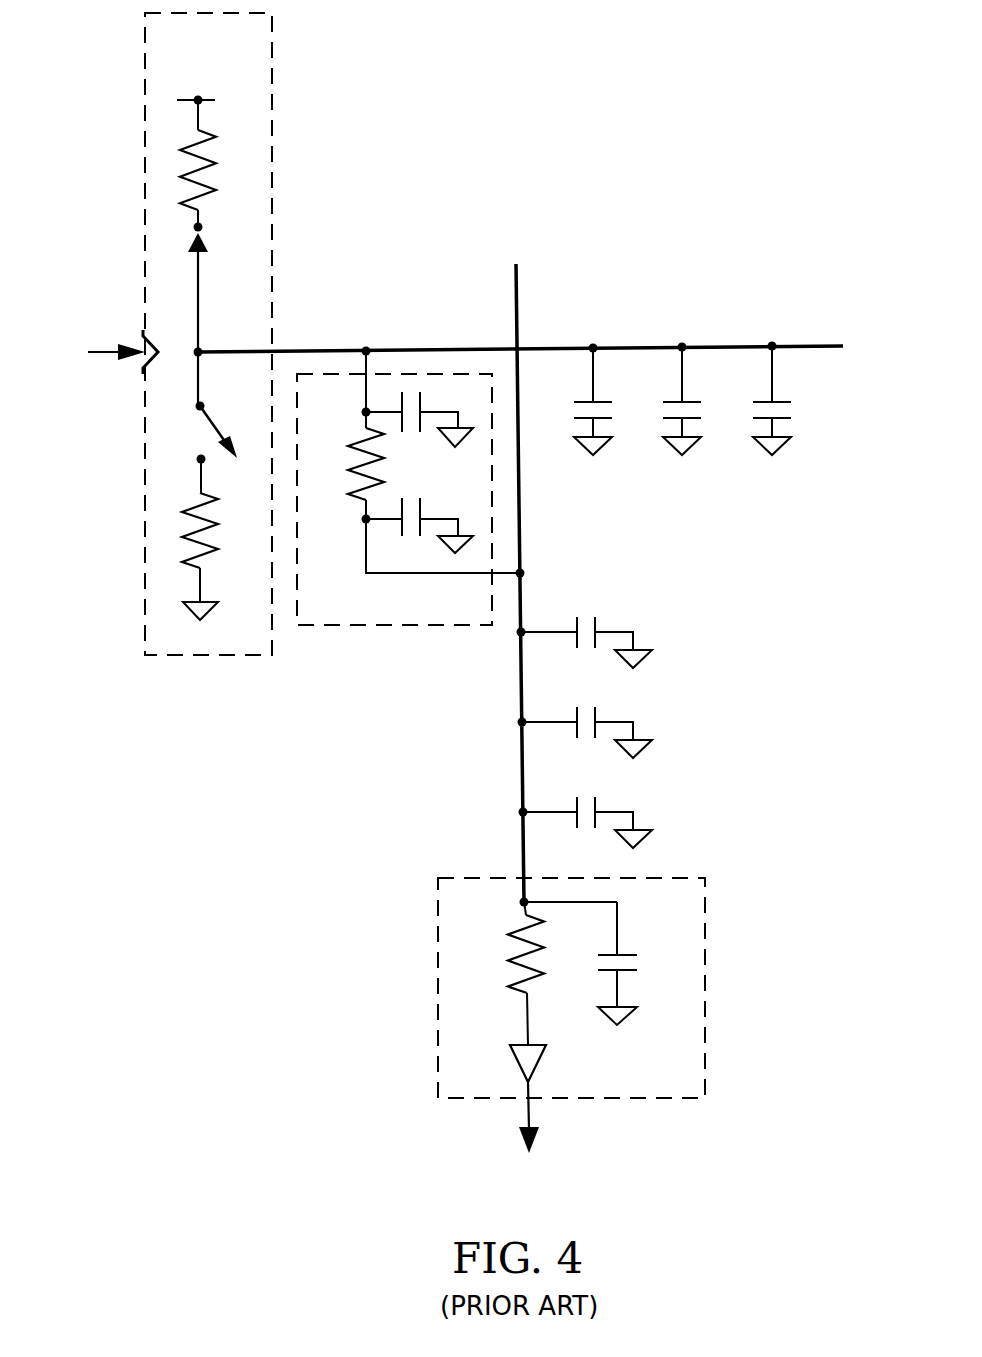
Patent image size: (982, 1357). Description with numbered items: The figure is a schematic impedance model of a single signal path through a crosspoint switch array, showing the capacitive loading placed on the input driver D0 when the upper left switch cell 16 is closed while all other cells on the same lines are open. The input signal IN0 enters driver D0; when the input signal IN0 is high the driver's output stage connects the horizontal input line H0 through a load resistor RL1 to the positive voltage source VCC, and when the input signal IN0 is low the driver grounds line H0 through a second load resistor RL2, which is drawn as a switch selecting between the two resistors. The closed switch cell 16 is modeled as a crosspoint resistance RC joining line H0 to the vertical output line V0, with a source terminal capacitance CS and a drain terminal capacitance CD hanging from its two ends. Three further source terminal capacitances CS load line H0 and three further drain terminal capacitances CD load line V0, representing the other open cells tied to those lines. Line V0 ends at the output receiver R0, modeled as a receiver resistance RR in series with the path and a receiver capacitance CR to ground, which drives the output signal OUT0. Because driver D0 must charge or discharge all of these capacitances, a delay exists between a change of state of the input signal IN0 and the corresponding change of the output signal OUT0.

The IN(0) signal IN0 is at (93, 352).
The driver D0 is at (208, 334).
The positive voltage source VCC is at (198, 100).
The load resistor RL1 is at (223, 163).
The load resistor RL2 is at (226, 539).
The input line H0 is at (463, 347).
The output line V0 is at (519, 758).
The switch cell 16 is at (411, 486).
The crosspoint resistance RC is at (343, 465).
The source terminal capacitance CS is at (578, 400).
The drain terminal capacitance CD is at (509, 673).
The output receiver R0 is at (571, 1004).
The receiver resistance RR is at (503, 973).
The receiver capacitance CR is at (635, 963).
The OUT(0) signal OUT0 is at (529, 1166).